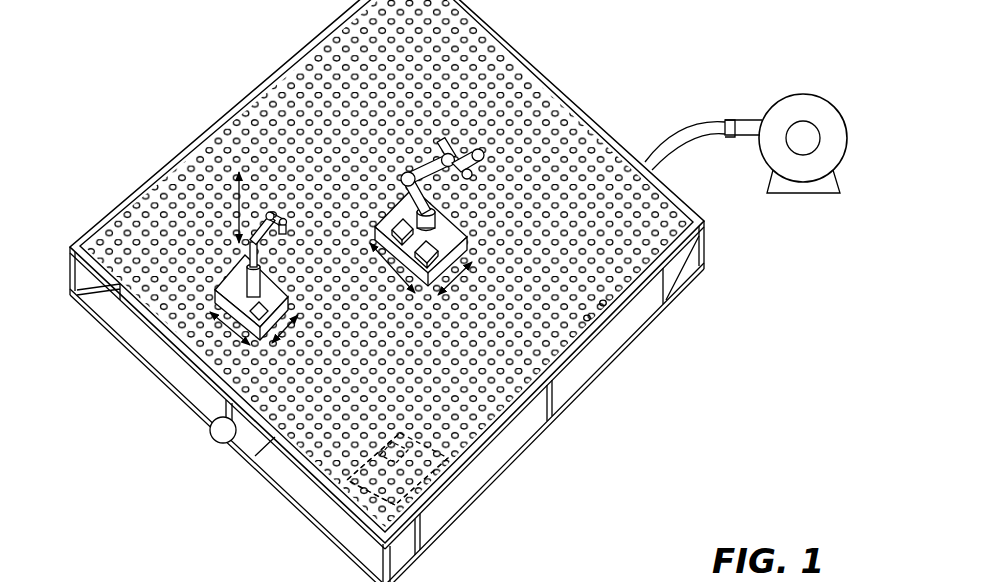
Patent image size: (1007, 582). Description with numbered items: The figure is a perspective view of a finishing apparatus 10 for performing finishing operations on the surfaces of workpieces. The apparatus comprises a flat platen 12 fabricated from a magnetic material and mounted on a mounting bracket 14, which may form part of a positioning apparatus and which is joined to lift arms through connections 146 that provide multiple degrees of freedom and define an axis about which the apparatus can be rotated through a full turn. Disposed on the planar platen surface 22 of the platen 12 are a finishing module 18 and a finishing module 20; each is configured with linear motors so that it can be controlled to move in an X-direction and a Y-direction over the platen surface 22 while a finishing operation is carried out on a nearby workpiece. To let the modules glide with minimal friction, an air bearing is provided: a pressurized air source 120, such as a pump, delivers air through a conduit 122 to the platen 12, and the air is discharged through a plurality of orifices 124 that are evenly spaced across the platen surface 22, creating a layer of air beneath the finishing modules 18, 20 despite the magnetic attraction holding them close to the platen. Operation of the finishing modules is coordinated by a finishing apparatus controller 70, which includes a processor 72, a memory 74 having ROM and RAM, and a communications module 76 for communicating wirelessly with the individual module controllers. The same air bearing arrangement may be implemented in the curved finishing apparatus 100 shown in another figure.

The finishing apparatus 10 is at (148, 68).
The platen 12 is at (513, 56).
The mounting bracket 14 is at (74, 278).
The finishing module 18 is at (233, 268).
The finishing module 20 is at (458, 219).
The platen surface 22 is at (413, 126).
The finishing apparatus controller 70 is at (468, 478).
The processor 72 is at (327, 498).
The memory 74 is at (412, 423).
The communications module 76 is at (430, 507).
The curved finishing apparatus 100 is at (125, 581).
The pressurized air source 120 is at (802, 93).
The conduit 122 is at (680, 136).
The orifices 124 is at (590, 320).
The connections 146 is at (224, 430).